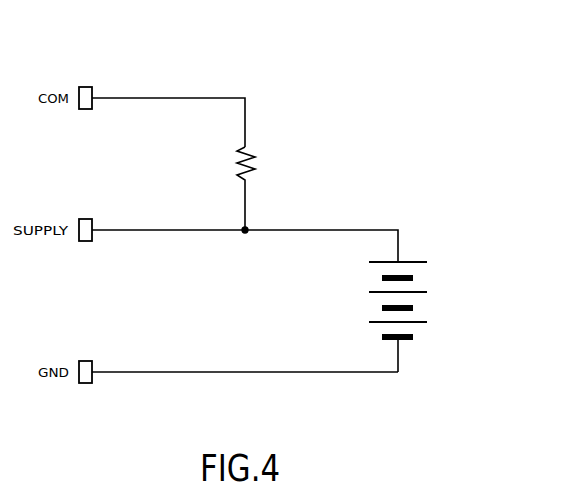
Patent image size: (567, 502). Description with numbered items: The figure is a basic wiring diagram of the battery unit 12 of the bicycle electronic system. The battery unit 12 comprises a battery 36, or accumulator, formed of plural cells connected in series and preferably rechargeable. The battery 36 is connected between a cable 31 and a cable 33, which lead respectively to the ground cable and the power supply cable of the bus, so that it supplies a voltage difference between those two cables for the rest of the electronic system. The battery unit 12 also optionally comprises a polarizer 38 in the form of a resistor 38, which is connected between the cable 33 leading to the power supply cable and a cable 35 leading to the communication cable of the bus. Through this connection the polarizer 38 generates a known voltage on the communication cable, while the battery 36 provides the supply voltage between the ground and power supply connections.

The battery unit 12 is at (432, 159).
The cable leading to the ground cable 31 is at (172, 372).
The cable leading to the power supply cable 33 is at (171, 230).
The cable leading to the communication cable 35 is at (163, 97).
The battery 36 is at (420, 292).
The polarizer 38 is at (257, 156).